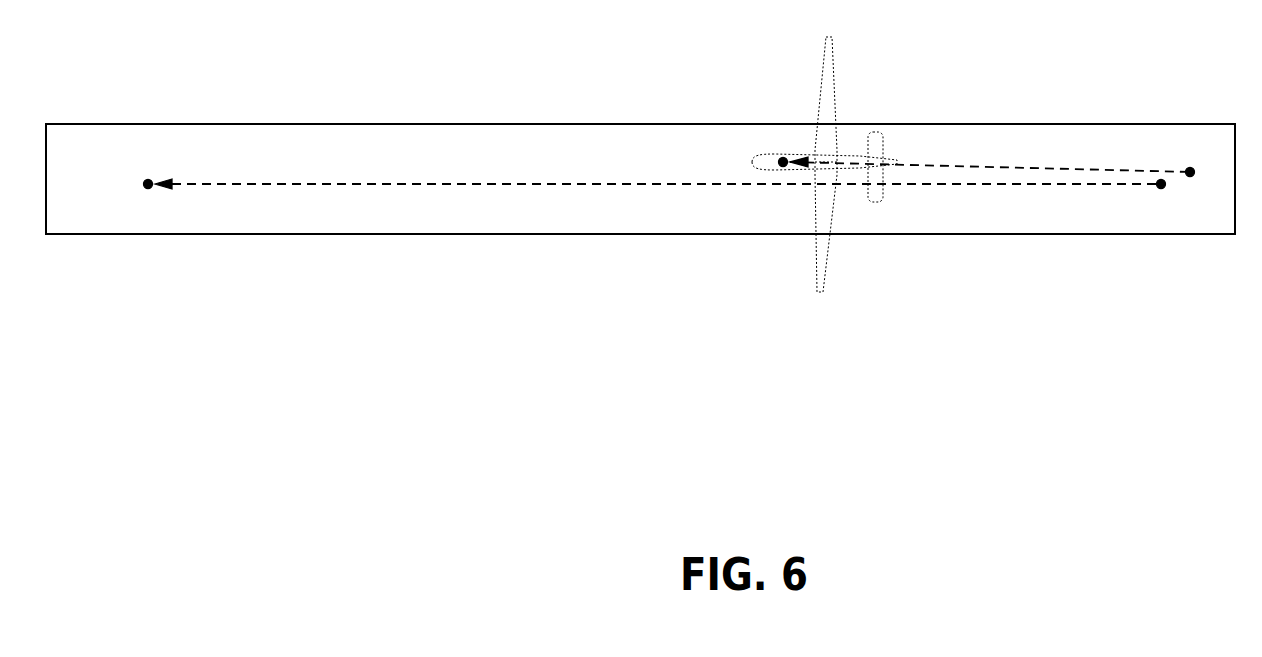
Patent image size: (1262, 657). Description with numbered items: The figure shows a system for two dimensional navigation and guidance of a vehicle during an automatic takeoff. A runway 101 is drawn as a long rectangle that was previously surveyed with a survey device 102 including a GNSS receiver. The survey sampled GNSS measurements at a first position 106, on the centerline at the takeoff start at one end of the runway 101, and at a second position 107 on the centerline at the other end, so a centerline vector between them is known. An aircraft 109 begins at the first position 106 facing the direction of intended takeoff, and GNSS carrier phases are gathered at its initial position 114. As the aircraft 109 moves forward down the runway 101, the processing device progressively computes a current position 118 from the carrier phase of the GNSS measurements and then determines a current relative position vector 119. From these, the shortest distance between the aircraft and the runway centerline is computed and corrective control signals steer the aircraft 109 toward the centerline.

The runway 101 is at (490, 124).
The survey device 102 is at (132, 124).
The first position 106 is at (1161, 188).
The second position 107 is at (148, 188).
The aircraft 109 is at (232, 184).
The initial position 114 is at (1190, 170).
The current position 118 is at (783, 160).
The current relative position vector 119 is at (955, 167).